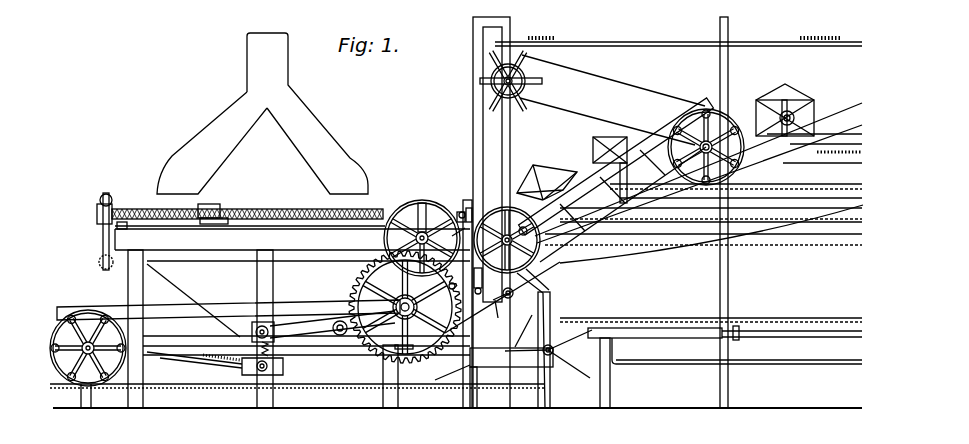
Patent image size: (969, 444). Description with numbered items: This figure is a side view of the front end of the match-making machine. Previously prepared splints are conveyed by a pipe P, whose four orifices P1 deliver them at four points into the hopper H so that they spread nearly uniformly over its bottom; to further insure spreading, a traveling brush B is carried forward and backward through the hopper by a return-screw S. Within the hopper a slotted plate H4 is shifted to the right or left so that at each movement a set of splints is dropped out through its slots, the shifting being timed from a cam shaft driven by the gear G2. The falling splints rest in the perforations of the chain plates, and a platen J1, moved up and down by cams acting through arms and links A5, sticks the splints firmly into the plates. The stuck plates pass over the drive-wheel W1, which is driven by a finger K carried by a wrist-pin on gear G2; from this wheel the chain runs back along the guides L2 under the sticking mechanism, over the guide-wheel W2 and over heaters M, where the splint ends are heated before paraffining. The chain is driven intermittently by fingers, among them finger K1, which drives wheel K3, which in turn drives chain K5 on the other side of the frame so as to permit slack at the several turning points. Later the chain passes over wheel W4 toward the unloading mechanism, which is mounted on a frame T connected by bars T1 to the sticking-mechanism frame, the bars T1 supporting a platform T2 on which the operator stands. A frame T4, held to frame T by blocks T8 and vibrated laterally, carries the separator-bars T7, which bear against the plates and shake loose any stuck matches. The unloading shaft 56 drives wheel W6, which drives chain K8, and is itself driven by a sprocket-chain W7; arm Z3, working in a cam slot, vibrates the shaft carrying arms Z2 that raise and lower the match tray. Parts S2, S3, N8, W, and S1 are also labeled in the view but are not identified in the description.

The pipe P is at (258, 59).
The orifices P1 is at (212, 143).
The return-screw S is at (264, 209).
The traveling brush B is at (212, 205).
The vertical shaft S2 is at (97, 262).
The hopper H is at (292, 315).
The finger K is at (228, 311).
The wheel W1 is at (60, 326).
The gear G2 is at (362, 282).
The gear hub shaft S3 is at (414, 307).
The ratchet N8 is at (443, 287).
The plate H4 is at (312, 322).
The links A5 is at (258, 347).
The platen J1 is at (260, 368).
The guides L2 is at (192, 362).
The drive wheel W is at (420, 200).
The frame T4 is at (460, 212).
The blocks T8 is at (462, 212).
The separator-bars T7 is at (469, 208).
The shaft S1 is at (452, 230).
The wheel W6 is at (532, 252).
The wheel W4 is at (542, 80).
The wheel K3 is at (710, 103).
The chain K5 is at (577, 170).
The finger K1 is at (616, 180).
The frame T is at (521, 338).
The guide-wheel W2 is at (565, 370).
The arm Z3 is at (558, 262).
The arms Z2 is at (490, 292).
The shaft 56 is at (495, 303).
The sprocket-chain W7 is at (498, 314).
The chain K8 is at (640, 254).
The platform T2 is at (415, 355).
The bars T1 is at (478, 362).
The heaters M is at (648, 333).